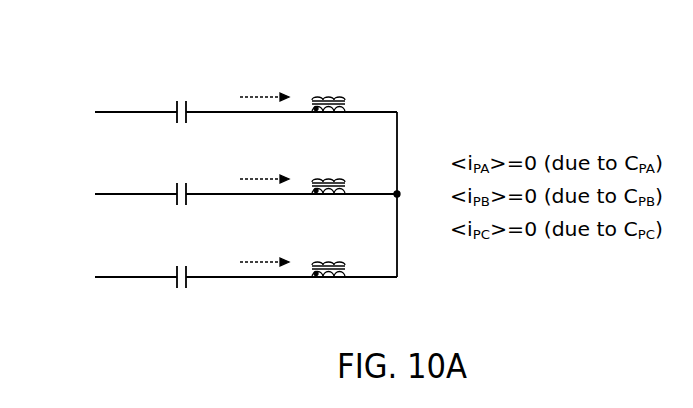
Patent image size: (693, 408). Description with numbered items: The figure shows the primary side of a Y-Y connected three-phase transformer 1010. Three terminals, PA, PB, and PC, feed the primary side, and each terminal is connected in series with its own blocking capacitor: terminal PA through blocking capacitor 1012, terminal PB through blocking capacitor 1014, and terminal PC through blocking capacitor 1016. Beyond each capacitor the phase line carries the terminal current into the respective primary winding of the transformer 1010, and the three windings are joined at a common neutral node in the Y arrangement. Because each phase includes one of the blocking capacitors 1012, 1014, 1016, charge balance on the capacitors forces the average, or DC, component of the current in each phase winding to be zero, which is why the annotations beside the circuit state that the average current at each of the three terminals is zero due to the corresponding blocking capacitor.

The Y-Y connected three-phase transformer 1010 is at (428, 58).
The blocking capacitor 1012 is at (163, 102).
The blocking capacitor 1014 is at (163, 183).
The blocking capacitor 1016 is at (167, 267).